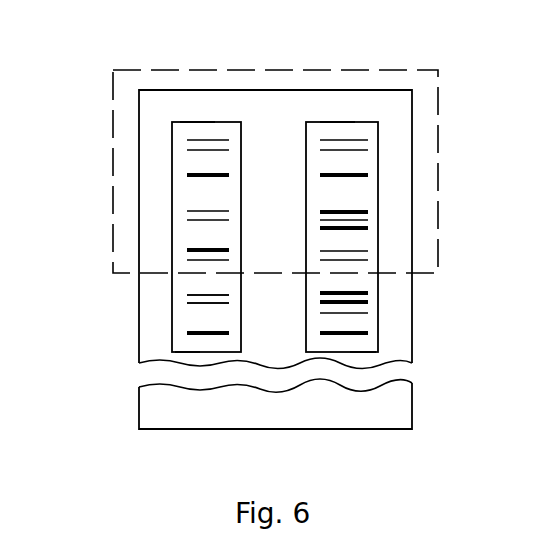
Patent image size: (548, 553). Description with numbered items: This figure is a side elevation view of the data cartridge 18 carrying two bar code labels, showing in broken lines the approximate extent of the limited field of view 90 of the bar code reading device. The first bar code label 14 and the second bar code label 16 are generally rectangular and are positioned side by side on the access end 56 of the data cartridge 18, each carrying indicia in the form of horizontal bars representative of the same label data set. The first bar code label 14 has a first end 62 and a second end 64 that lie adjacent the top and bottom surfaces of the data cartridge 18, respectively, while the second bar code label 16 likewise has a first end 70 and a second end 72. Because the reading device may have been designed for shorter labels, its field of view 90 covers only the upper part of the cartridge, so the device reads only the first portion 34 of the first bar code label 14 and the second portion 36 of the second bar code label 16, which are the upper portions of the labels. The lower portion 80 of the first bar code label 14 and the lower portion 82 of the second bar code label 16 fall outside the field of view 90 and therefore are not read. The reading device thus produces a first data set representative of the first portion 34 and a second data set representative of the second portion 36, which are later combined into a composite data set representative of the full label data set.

The first bar code label 14 is at (172, 302).
The second bar code label 16 is at (378, 314).
The data cartridge 18 is at (138, 105).
The first portion 34 is at (172, 216).
The second portion 36 is at (378, 232).
The access end 56 is at (382, 407).
The first end 62 is at (195, 122).
The second end 64 is at (187, 352).
The first end 70 is at (367, 352).
The second end 72 is at (337, 122).
The lower portion 80 is at (172, 325).
The lower portion 82 is at (378, 325).
The field of view 90 is at (440, 150).